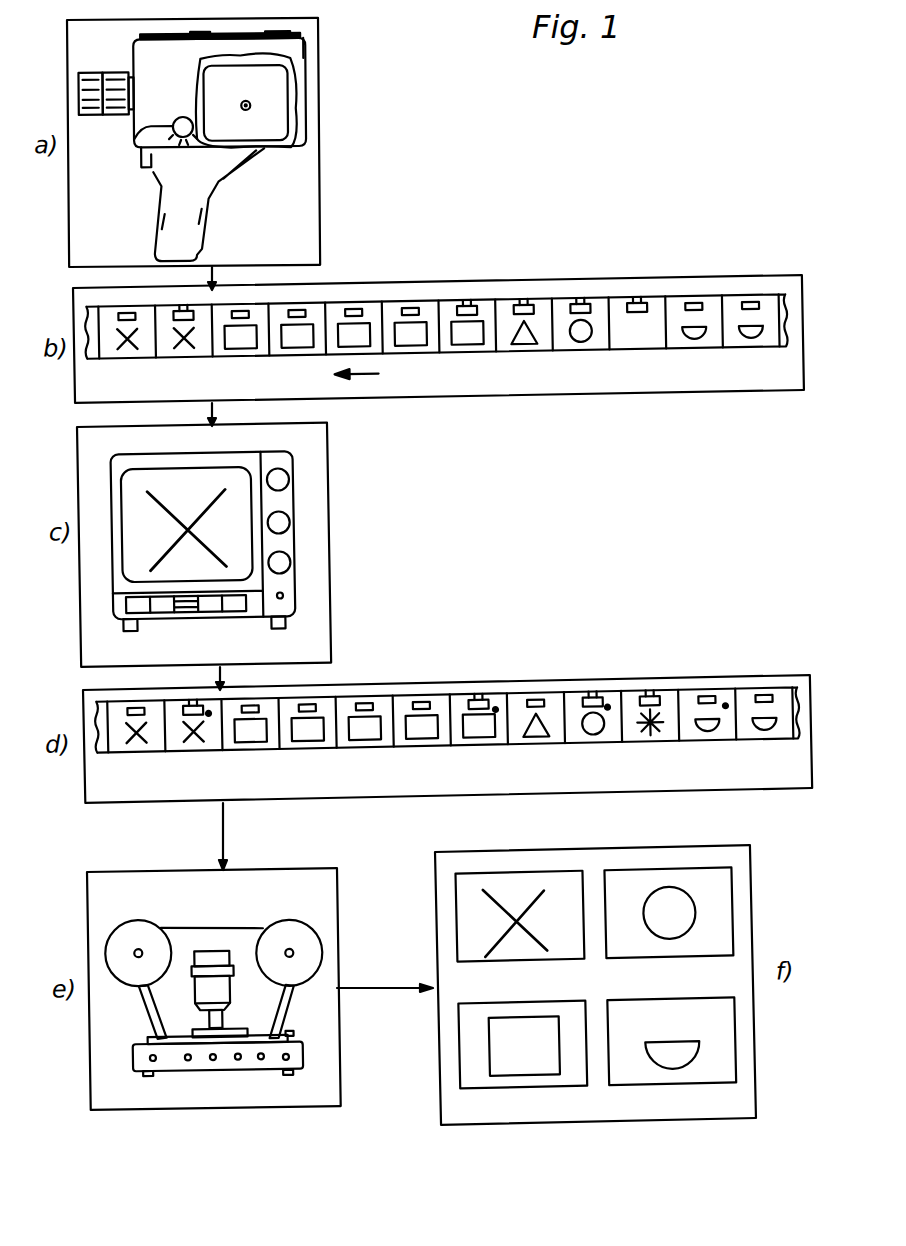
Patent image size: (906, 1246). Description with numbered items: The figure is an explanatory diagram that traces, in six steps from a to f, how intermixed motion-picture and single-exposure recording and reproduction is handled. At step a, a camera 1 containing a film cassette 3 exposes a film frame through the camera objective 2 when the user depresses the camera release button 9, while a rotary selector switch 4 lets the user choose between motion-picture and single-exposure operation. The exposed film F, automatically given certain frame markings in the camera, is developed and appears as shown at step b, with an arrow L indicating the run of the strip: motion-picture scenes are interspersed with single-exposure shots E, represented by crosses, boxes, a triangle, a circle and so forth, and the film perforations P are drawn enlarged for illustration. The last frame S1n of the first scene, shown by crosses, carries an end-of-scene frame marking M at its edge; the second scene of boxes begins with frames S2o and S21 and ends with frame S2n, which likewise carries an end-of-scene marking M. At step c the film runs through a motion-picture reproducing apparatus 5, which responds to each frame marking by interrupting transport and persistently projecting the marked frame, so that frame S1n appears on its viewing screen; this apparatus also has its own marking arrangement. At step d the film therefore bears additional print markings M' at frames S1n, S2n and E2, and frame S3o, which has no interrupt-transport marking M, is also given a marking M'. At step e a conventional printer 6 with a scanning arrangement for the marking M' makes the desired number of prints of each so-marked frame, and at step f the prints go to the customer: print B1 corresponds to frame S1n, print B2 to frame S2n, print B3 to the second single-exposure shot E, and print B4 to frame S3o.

The camera 1 is at (285, 48).
The camera objective 2 is at (82, 73).
The film cassette 3 is at (273, 88).
The rotary selector switch 4 is at (170, 128).
The camera release button 9 is at (140, 160).
The motion-picture reproducing apparatus 5 is at (282, 546).
The printer 6 is at (233, 940).
The end-of-scene frame marking M is at (418, 475).
The additional marking M' is at (468, 677).
The film perforations P is at (697, 313).
The exposed film F is at (770, 313).
The film running direction L is at (378, 379).
The last frame of the first scene S1n is at (172, 352).
The scene 2 first frame S2o is at (234, 347).
The scene 2 frame S21 is at (290, 346).
The last frame of the second scene S2n is at (460, 348).
The frame S3o is at (693, 350).
The single-exposure shot E is at (632, 352).
The frame E2 is at (592, 747).
The print B1 is at (473, 909).
The print B2 is at (473, 1051).
The print B3 is at (714, 901).
The print B4 is at (710, 1052).